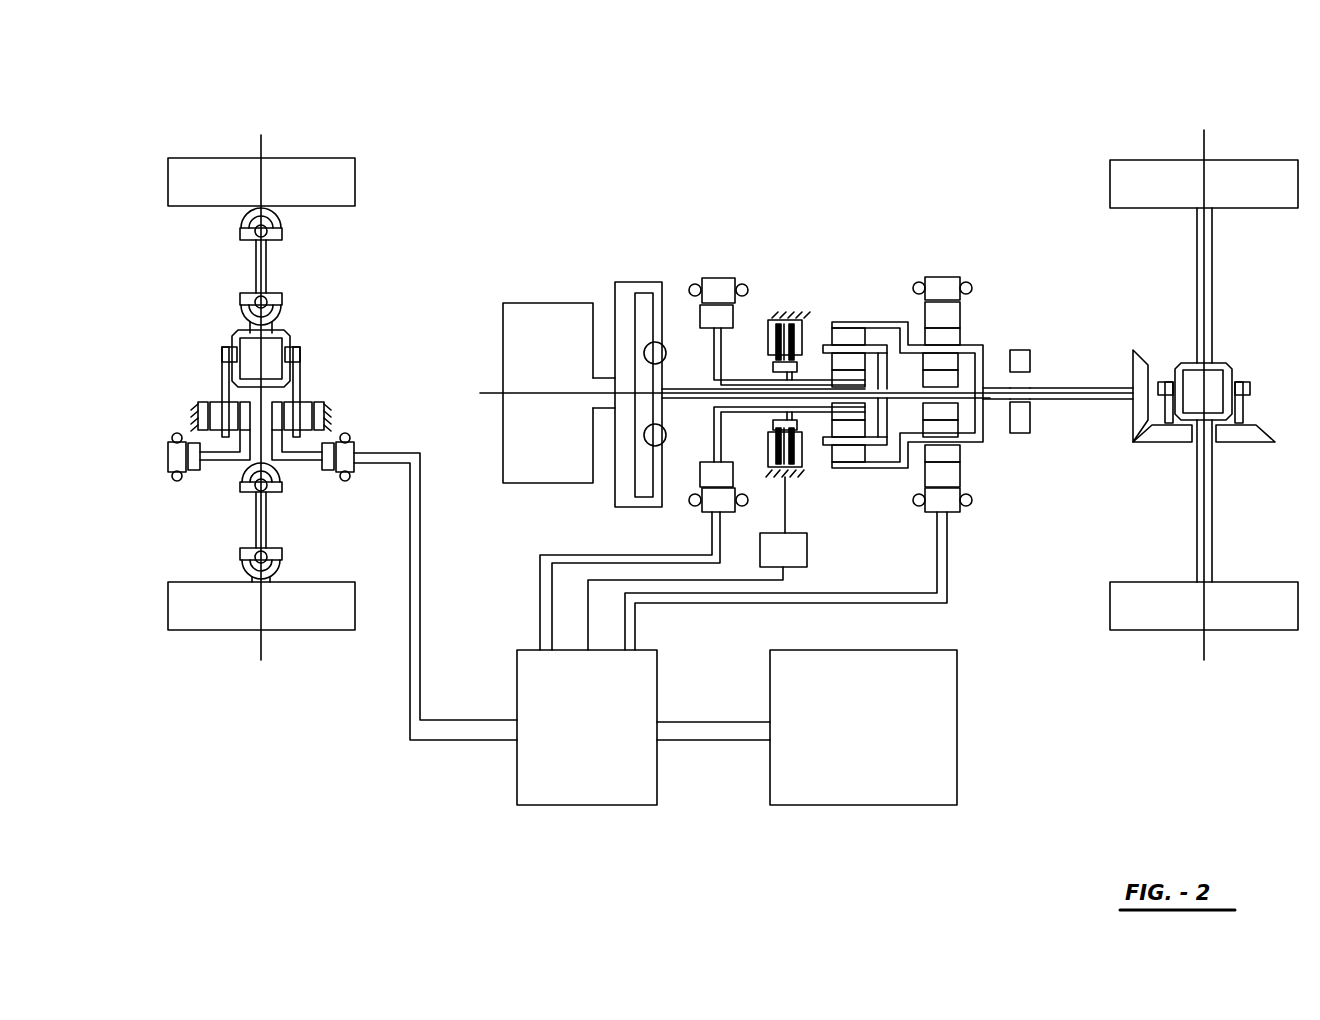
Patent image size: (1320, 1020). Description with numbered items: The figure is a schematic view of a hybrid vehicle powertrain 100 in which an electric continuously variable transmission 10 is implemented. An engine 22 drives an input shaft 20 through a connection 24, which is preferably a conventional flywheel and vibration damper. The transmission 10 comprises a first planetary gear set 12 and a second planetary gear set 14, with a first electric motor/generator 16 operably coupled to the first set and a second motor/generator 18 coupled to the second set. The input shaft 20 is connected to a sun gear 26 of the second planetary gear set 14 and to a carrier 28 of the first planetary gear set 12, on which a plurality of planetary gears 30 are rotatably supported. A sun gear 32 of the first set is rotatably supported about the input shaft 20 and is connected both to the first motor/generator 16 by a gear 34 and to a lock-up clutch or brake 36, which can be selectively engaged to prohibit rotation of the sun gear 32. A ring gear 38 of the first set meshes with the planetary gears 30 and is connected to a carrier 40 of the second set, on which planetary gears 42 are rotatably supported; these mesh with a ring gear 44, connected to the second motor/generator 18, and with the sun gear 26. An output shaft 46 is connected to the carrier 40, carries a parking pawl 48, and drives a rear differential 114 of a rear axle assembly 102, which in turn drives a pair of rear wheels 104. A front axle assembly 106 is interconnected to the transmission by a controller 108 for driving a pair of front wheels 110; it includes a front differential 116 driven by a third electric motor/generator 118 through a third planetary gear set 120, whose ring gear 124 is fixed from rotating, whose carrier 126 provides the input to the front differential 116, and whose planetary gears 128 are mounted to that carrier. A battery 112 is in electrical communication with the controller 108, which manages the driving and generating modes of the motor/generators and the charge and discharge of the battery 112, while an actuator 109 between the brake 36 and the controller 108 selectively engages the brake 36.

The electric continuously variable transmission 10 is at (815, 135).
The first planetary gear set 12 is at (936, 391).
The second planetary gear set 14 is at (978, 458).
The first electric motor/generator 16 is at (718, 290).
The second motor/generator 18 is at (942, 290).
The input shaft 20 is at (683, 402).
The engine 22 is at (548, 322).
The connection 24 is at (642, 305).
The sun gear 26 is at (950, 410).
The carrier 28 is at (893, 345).
The planetary gears 30 is at (848, 330).
The sun gear 32 is at (835, 378).
The gear 34 is at (735, 318).
The brake 36 is at (806, 452).
The ring gear 38 is at (860, 330).
The carrier 40 is at (988, 347).
The planetary gears 42 is at (948, 340).
The ring gear 44 is at (945, 318).
The output shaft 46 is at (1085, 402).
The parking pawl 48 is at (1028, 366).
The hybrid vehicle powertrain 100 is at (350, 765).
The rear axle assembly 102 is at (1150, 452).
The rear wheels 104 is at (1145, 198).
The front axle assembly 106 is at (325, 390).
The controller 108 is at (590, 785).
The actuator 109 is at (802, 553).
The front wheels 110 is at (203, 165).
The battery 112 is at (865, 785).
The rear differential 114 is at (1212, 386).
The front differential 116 is at (222, 340).
The third electric motor/generator 118 is at (178, 462).
The third planetary gear set 120 is at (190, 405).
The ring gear 124 is at (328, 415).
The carrier 126 is at (300, 385).
The planetary gears 128 is at (205, 410).